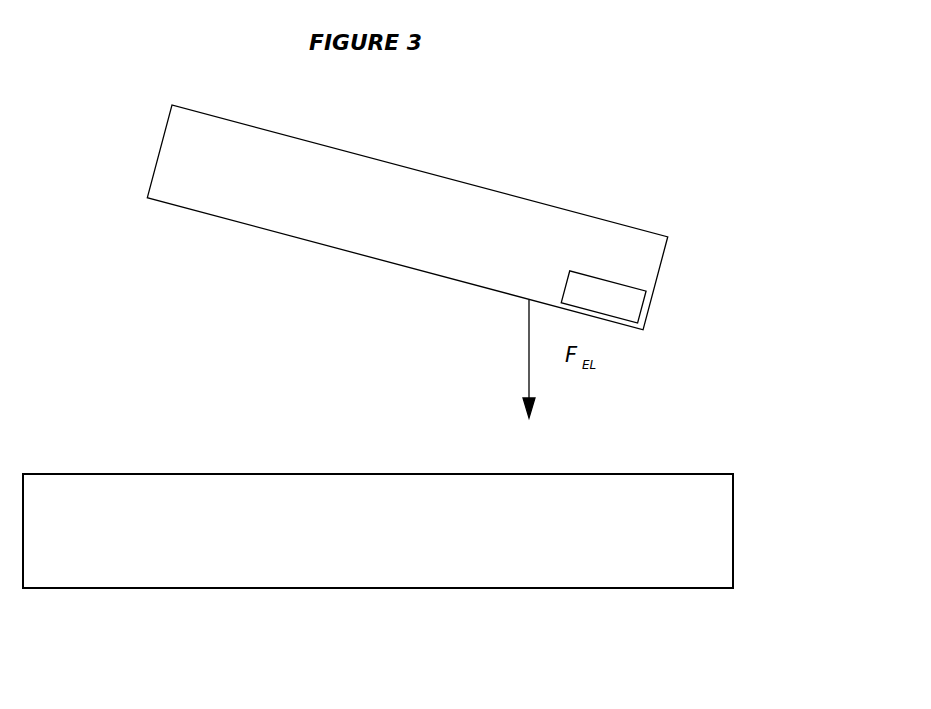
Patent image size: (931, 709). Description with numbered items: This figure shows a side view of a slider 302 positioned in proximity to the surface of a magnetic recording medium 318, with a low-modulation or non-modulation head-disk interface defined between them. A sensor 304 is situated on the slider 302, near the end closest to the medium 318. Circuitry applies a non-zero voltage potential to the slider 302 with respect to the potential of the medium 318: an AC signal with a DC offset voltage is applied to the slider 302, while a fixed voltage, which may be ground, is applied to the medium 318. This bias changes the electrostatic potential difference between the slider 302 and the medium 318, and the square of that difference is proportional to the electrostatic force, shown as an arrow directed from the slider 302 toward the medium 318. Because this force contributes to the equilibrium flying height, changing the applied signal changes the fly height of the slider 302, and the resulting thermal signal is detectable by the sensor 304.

The slider 302 is at (662, 258).
The sensor 304 is at (650, 305).
The magnetic recording medium 318 is at (734, 511).